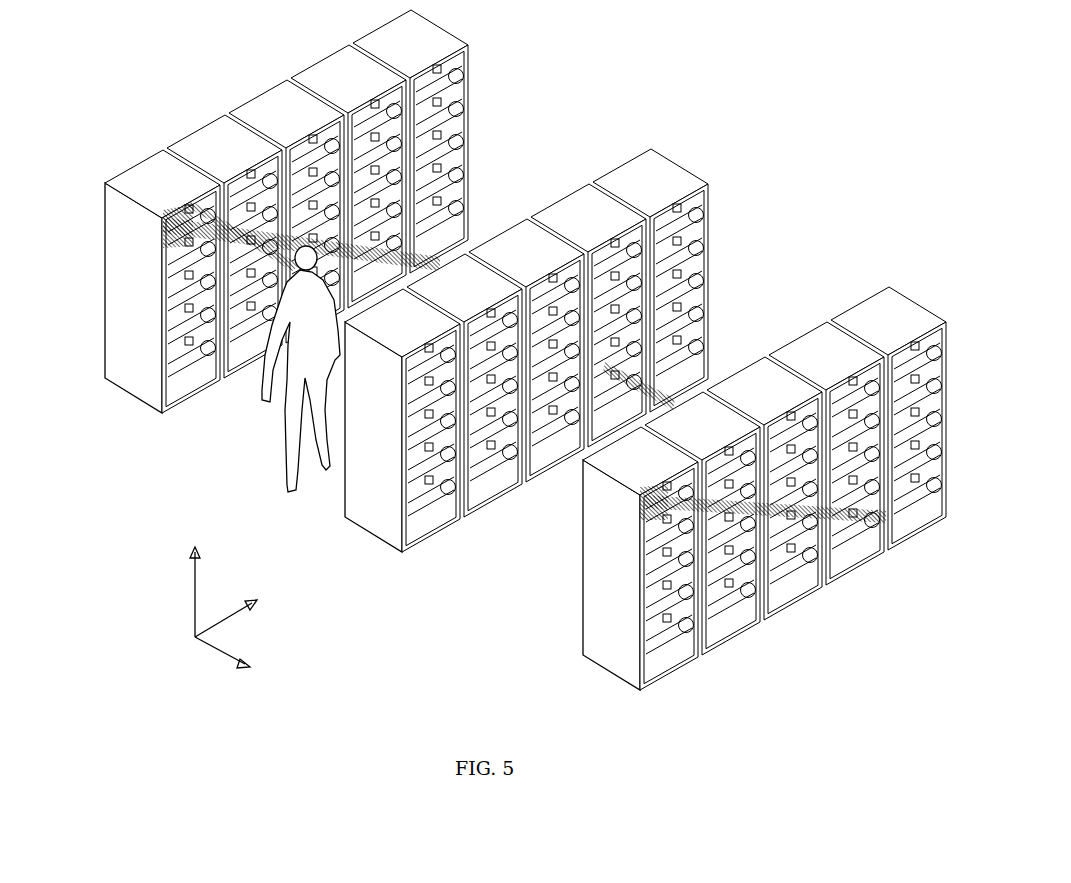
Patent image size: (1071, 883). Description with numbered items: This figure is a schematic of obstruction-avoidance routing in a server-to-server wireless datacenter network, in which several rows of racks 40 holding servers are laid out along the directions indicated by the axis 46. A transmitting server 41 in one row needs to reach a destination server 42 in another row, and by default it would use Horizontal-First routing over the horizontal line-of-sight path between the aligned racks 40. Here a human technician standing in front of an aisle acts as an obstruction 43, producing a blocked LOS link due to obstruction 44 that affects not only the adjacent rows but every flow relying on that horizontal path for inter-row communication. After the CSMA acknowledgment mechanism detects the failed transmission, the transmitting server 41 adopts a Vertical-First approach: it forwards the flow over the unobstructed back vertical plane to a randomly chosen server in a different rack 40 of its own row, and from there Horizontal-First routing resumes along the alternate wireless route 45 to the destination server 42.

The rack 40 is at (488, 350).
The transmitting server 41 is at (167, 230).
The destination server 42 is at (647, 510).
The obstruction 43 is at (292, 433).
The blocked LOS link due to obstruction 44 is at (240, 245).
The alternate wireless route 45 is at (447, 32).
The axis 46 is at (195, 590).